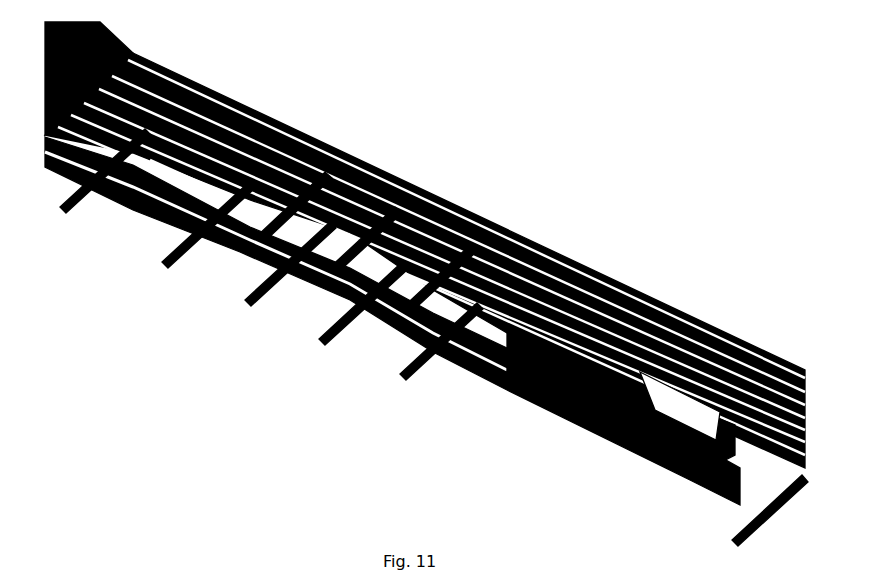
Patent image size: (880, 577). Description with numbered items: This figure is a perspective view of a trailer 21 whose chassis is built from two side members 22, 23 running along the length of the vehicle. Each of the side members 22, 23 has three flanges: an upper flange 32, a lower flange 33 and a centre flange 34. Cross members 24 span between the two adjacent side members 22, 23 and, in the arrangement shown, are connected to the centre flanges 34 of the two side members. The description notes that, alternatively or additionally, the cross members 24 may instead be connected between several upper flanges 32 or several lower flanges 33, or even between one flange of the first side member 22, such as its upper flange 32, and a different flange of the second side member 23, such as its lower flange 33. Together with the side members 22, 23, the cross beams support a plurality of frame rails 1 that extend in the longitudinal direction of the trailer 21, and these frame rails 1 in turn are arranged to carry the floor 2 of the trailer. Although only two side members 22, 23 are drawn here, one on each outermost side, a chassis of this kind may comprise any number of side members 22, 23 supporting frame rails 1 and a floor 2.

The frame rails 1 is at (456, 211).
The floor 2 is at (113, 47).
The trailer 21 is at (632, 136).
The first side member 22 is at (468, 262).
The second side member 23 is at (375, 345).
The cross members 24 is at (283, 218).
The upper flange 32 is at (150, 178).
The lower flange 33 is at (305, 297).
The centre flange 34 is at (247, 247).